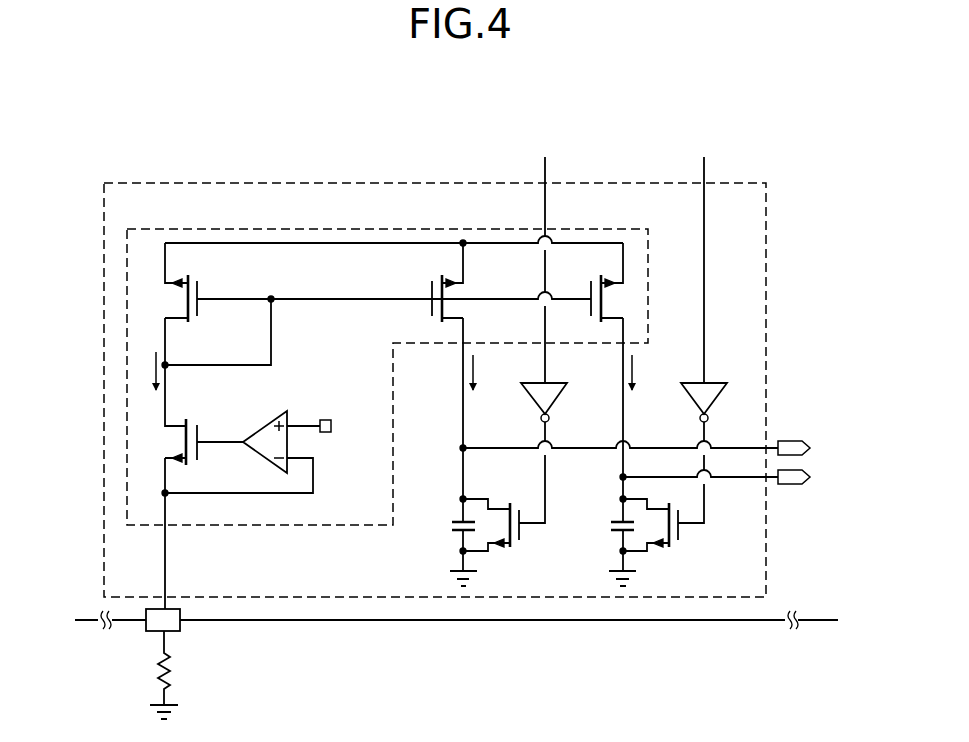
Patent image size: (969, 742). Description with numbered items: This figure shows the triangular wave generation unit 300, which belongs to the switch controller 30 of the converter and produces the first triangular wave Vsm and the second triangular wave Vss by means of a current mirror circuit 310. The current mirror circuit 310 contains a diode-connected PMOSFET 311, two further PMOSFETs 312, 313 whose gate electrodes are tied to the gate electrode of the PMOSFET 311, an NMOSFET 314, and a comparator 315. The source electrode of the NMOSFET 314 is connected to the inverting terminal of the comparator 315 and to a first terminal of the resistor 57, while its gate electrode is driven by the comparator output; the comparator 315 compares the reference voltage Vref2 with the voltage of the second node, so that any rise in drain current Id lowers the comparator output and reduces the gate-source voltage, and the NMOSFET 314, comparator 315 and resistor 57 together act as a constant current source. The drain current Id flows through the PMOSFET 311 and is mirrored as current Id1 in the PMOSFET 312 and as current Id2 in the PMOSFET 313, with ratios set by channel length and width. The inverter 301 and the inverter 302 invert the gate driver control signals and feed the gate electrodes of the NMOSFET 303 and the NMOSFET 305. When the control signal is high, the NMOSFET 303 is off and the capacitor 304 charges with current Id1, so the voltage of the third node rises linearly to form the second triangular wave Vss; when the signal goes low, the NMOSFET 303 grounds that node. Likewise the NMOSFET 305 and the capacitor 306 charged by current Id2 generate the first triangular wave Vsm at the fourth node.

The switch controller 30 is at (650, 622).
The resistor 57 is at (173, 675).
The triangular wave generation unit 300 is at (766, 320).
The current mirror circuit 310 is at (478, 228).
The diode-connected PMOSFET 311 is at (200, 304).
The PMOSFET 312 is at (430, 345).
The PMOSFET 313 is at (590, 359).
The NMOSFET 314 is at (204, 429).
The comparator 315 is at (258, 456).
The inverter 301 is at (713, 395).
The inverter 302 is at (553, 393).
The NMOSFET 303 is at (512, 528).
The capacitor 304 is at (448, 528).
The NMOSFET 305 is at (672, 528).
The capacitor 306 is at (607, 528).